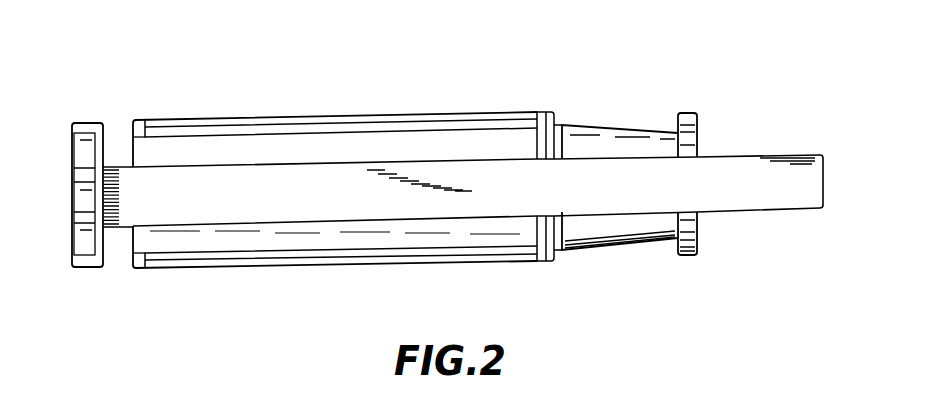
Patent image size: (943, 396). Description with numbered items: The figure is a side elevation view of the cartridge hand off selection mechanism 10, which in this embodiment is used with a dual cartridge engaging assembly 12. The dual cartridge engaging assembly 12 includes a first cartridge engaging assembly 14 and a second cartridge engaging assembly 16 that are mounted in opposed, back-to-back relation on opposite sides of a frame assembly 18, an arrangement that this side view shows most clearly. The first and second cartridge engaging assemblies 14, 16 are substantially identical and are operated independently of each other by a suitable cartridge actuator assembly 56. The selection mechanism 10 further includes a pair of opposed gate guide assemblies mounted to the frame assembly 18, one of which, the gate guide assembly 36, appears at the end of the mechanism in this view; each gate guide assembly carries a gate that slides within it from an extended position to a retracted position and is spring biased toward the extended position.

The cartridge hand off selection mechanism 10 is at (286, 85).
The dual cartridge engaging assembly 12 is at (771, 148).
The first cartridge engaging assembly 14 is at (447, 108).
The second cartridge engaging assembly 16 is at (369, 268).
The frame assembly 18 is at (786, 212).
The gate guide assembly 36 is at (82, 272).
The cartridge actuator assembly 56 is at (631, 253).